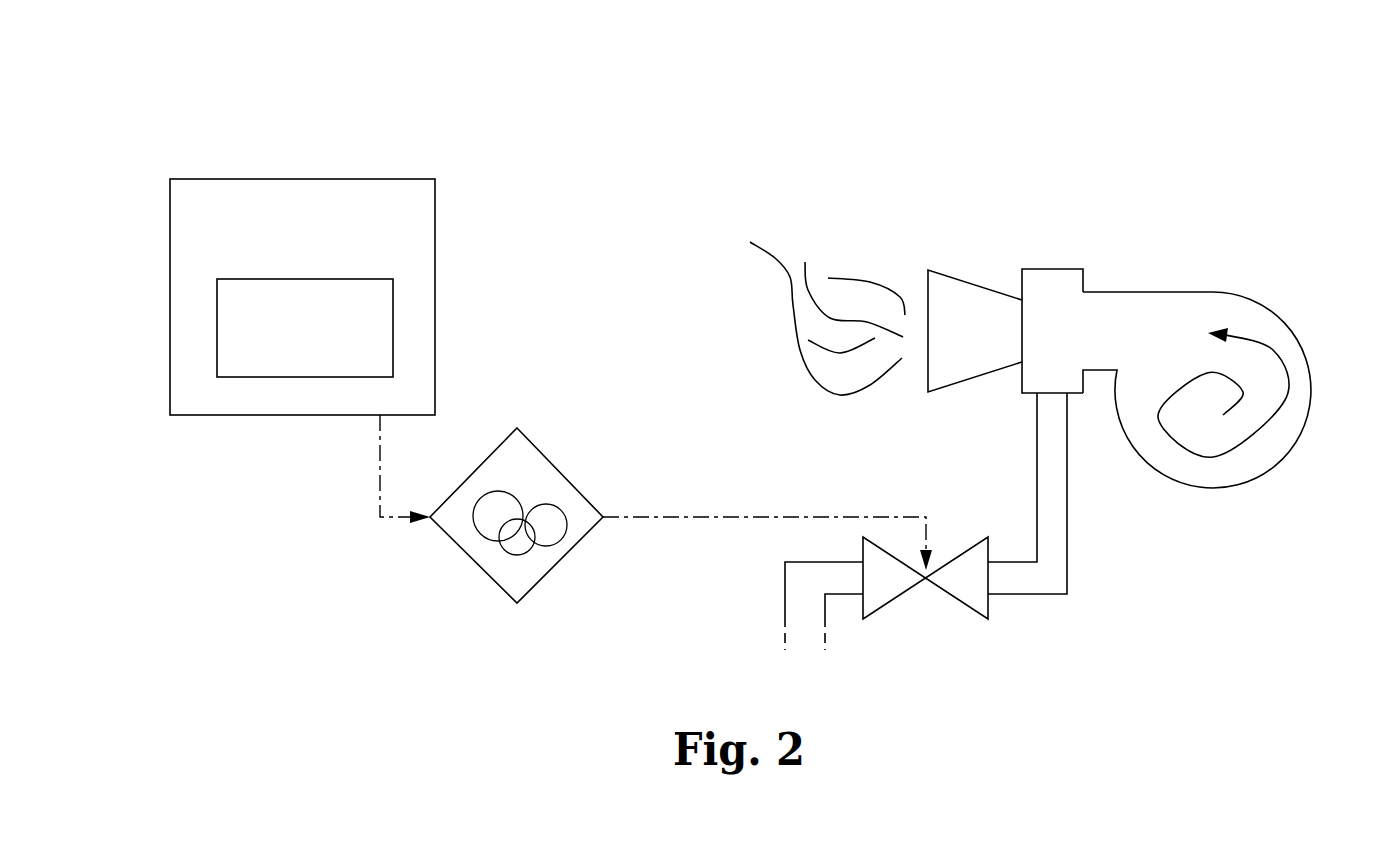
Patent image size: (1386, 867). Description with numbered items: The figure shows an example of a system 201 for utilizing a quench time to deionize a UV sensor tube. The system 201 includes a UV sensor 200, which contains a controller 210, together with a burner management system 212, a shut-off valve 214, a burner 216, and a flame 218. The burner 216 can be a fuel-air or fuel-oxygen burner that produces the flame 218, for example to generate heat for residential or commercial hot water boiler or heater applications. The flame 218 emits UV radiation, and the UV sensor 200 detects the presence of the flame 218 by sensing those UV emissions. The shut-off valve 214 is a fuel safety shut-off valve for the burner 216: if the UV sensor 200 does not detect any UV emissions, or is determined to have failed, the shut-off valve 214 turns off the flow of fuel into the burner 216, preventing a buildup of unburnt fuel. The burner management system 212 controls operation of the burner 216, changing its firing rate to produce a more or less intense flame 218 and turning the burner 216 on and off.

The UV sensor 200 is at (170, 272).
The system 201 is at (222, 103).
The controller 210 is at (320, 357).
The burner management system 212 is at (537, 582).
The shut-off valve 214 is at (988, 617).
The burner 216 is at (1312, 388).
The flame 218 is at (805, 250).